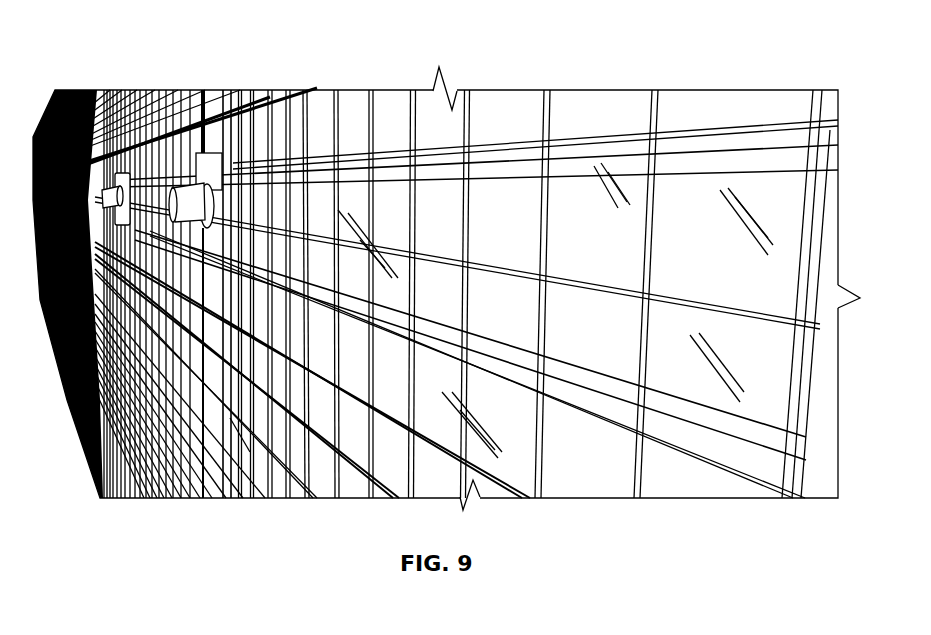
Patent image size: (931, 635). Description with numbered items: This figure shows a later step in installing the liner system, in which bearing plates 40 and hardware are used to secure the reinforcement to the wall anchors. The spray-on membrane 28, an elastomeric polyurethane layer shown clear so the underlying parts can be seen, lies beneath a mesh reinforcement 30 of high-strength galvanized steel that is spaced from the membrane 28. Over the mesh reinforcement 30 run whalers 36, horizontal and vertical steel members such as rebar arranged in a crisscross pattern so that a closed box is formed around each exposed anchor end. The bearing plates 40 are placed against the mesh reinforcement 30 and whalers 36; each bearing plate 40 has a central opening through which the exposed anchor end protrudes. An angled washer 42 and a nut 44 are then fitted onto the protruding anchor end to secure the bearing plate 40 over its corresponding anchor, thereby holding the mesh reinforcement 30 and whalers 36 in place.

The membrane 28 is at (767, 120).
The mesh reinforcement 30 is at (548, 90).
The whalers 36 is at (225, 90).
The bearing plates 40 is at (87, 93).
The angled washer 42 is at (224, 153).
The nut 44 is at (54, 90).